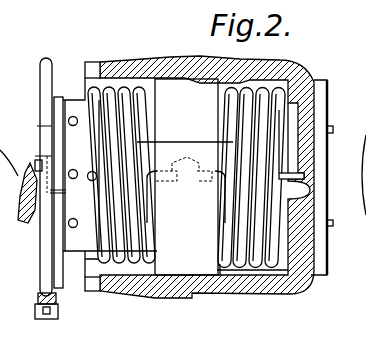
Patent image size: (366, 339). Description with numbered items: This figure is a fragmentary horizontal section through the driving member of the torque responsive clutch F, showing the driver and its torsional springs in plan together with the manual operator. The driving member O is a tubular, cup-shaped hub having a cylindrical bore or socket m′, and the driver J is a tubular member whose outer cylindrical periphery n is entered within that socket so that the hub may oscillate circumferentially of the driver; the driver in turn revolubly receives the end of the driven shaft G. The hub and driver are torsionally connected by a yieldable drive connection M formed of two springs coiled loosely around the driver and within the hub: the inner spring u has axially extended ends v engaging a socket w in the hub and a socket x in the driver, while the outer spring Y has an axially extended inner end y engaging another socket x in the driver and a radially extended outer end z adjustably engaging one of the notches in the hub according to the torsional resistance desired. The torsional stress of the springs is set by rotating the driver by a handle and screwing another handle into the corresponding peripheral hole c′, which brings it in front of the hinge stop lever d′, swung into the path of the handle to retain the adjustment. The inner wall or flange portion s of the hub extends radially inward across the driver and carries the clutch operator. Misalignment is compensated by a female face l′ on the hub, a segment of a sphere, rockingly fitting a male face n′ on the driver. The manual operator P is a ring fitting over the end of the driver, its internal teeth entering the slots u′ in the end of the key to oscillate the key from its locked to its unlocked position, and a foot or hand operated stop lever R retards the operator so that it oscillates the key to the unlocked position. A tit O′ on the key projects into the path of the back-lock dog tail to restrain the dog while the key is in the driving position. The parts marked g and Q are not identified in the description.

The torque responsive clutch F is at (207, 167).
The manual operator P is at (46, 58).
The hinge stop lever d′ is at (85, 64).
The peripheral hole c′ is at (74, 116).
The outer spring Y is at (140, 112).
The inner spring u is at (233, 116).
The driver J is at (186, 177).
The yieldable drive connection M is at (185, 141).
The socket in the driver x is at (183, 165).
The axially extended inner end of outer spring y is at (158, 197).
The axially extended ends of inner spring v is at (327, 150).
The inner wall or flange portion of the hub s is at (327, 102).
The socket in the hub w is at (312, 190).
The driven shaft G is at (88, 183).
The lever g is at (2, 109).
The tit O′ is at (34, 160).
The slots in the end of the key u′ is at (71, 159).
The female face of the hub l′ is at (194, 308).
The radially extended outer end of outer spring z is at (92, 181).
The outer cylindrical periphery of the driver n is at (75, 226).
The stop lever R is at (52, 298).
The lower block Q is at (84, 289).
The cylindrical bore or socket of the hub m′ is at (110, 292).
The driving member O is at (149, 298).
The male face of the driver n′ is at (208, 274).